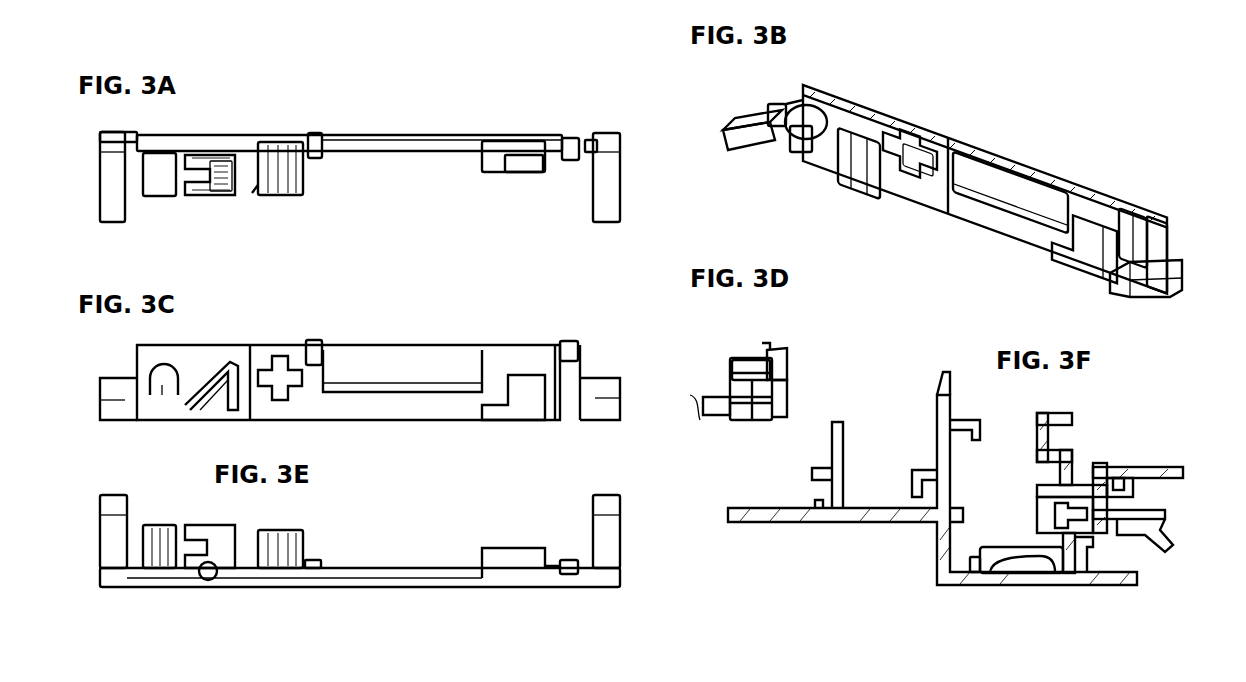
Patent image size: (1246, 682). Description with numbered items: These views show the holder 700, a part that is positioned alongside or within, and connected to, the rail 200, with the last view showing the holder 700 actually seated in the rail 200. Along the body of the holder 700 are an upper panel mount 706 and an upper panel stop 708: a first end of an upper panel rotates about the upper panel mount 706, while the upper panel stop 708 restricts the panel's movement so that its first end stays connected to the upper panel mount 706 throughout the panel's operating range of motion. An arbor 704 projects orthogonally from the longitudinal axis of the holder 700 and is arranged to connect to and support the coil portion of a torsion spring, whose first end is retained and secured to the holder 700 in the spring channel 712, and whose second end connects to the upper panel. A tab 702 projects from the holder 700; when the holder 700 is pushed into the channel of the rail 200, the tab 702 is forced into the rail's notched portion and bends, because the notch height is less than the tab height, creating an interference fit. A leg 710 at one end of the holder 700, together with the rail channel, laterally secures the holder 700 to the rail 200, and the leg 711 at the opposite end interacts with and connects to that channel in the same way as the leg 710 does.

In FIG. 3F, the rail 200 is at (1168, 418).
In FIG. 3A, the holder 700 is at (562, 78).
In FIG. 3B, the holder 700 is at (1139, 131).
In FIG. 3C, the holder 700 is at (614, 298).
In FIG. 3D, the holder 700 is at (813, 339).
In FIG. 3E, the holder 700 is at (539, 494).
In FIG. 3F, the holder 700 is at (1012, 516).
In FIG. 3A, the tab 702 is at (571, 163).
In FIG. 3B, the tab 702 is at (1146, 213).
In FIG. 3C, the tab 702 is at (574, 340).
In FIG. 3D, the tab 702 is at (776, 345).
In FIG. 3E, the tab 702 is at (574, 562).
In FIG. 3A, the arbor 704 is at (288, 197).
In FIG. 3B, the arbor 704 is at (905, 190).
In FIG. 3C, the arbor 704 is at (290, 402).
In FIG. 3D, the arbor 704 is at (757, 360).
In FIG. 3E, the arbor 704 is at (284, 534).
In FIG. 3A, the upper panel mount 706 is at (158, 197).
In FIG. 3B, the upper panel mount 706 is at (808, 152).
In FIG. 3C, the upper panel mount 706 is at (175, 400).
In FIG. 3E, the upper panel mount 706 is at (170, 524).
In FIG. 3A, the upper panel stop 708 is at (210, 197).
In FIG. 3B, the upper panel stop 708 is at (848, 184).
In FIG. 3C, the upper panel stop 708 is at (222, 420).
In FIG. 3E, the upper panel stop 708 is at (213, 528).
In FIG. 3A, the leg 710 is at (621, 165).
In FIG. 3B, the leg 710 is at (1114, 290).
In FIG. 3C, the leg 710 is at (621, 404).
In FIG. 3E, the leg 710 is at (621, 540).
In FIG. 3F, the leg 710 is at (1002, 580).
In FIG. 3A, the leg 711 is at (100, 192).
In FIG. 3B, the leg 711 is at (733, 117).
In FIG. 3C, the leg 711 is at (100, 385).
In FIG. 3E, the leg 711 is at (100, 550).
In FIG. 3A, the spring channel 712 is at (500, 176).
In FIG. 3B, the spring channel 712 is at (1050, 262).
In FIG. 3C, the spring channel 712 is at (510, 422).
In FIG. 3E, the spring channel 712 is at (513, 552).